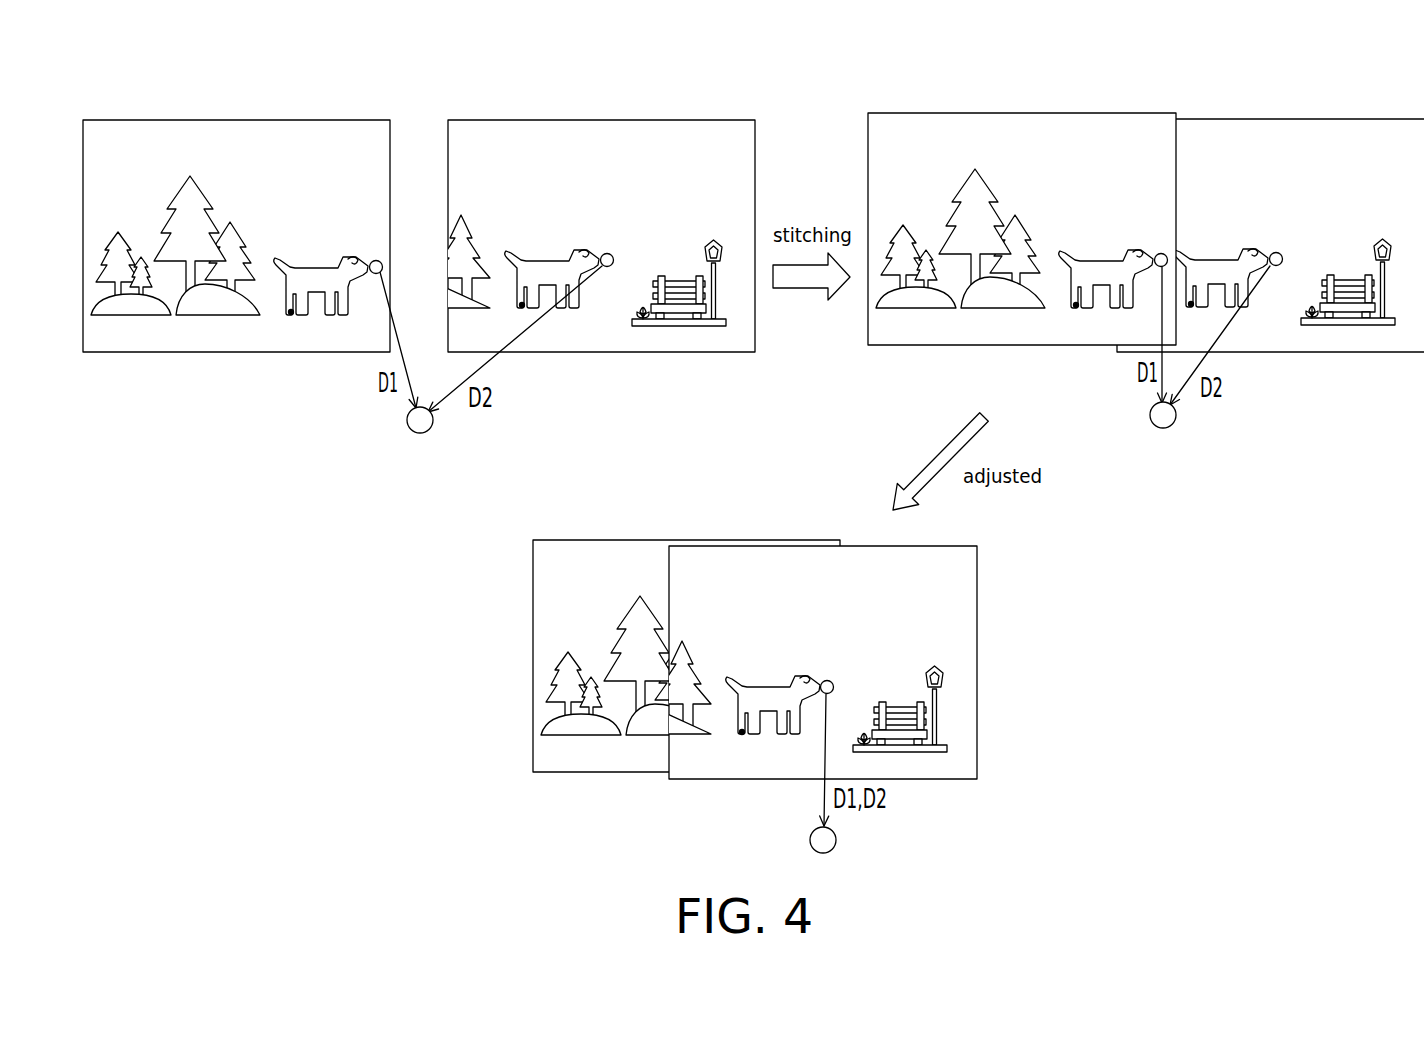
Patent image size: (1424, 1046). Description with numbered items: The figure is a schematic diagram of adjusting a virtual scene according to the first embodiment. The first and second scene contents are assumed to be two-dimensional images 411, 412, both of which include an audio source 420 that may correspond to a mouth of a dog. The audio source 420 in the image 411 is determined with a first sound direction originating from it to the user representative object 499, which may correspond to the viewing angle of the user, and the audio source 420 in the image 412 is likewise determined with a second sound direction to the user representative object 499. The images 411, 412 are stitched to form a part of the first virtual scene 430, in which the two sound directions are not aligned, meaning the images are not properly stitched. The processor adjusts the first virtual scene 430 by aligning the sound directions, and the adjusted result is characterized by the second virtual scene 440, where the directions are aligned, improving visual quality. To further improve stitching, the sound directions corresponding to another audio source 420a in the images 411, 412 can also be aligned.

The 2D image 411 is at (72, 196).
The 2D image 412 is at (758, 198).
The audio source 420 is at (603, 255).
The another audio source 420a is at (291, 314).
The first virtual scene 430 is at (1287, 365).
The second virtual scene 440 is at (520, 615).
The user representative object 499 is at (432, 419).